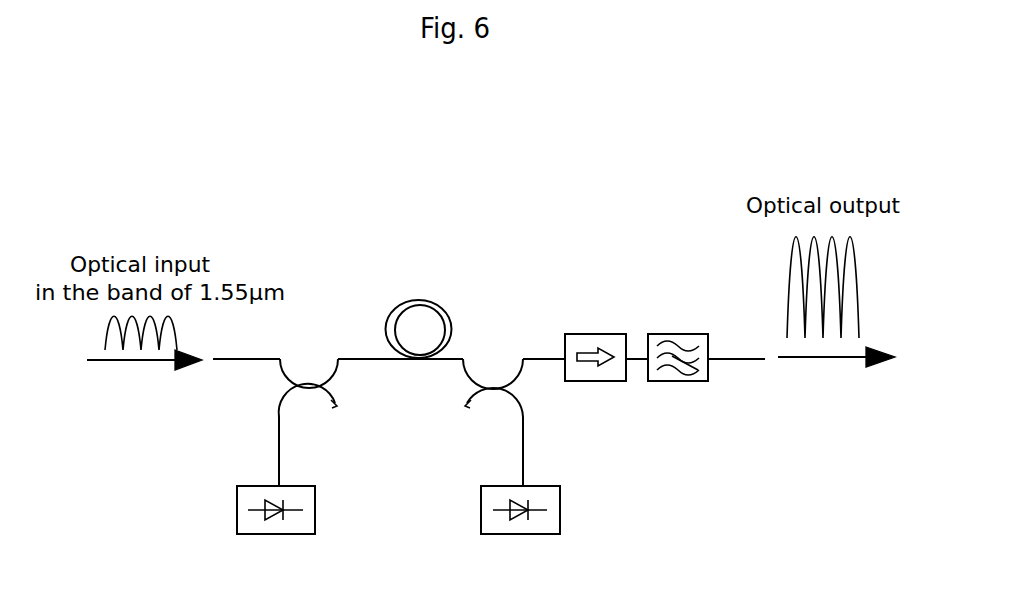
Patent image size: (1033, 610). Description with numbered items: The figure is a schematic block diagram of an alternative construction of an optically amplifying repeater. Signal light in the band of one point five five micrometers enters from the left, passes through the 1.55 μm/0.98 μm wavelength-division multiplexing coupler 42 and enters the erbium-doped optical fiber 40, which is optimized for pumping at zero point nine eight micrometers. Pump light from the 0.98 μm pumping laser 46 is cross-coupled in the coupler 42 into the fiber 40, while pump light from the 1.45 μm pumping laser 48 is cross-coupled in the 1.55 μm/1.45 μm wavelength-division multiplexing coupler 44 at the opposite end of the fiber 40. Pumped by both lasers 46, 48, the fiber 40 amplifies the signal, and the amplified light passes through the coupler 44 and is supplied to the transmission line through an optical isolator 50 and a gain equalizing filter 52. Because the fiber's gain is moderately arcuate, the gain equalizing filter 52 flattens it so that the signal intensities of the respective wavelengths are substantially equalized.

The erbium-doped optical fiber 40 is at (418, 320).
The 1.55 μm/0.98 μm wavelength-division multiplexing coupler 42 is at (313, 376).
The 1.55 μm/1.45 μm wavelength-division multiplexing coupler 44 is at (489, 377).
The 0.98 μm pumping laser 46 is at (243, 500).
The 1.45 μm pumping laser 48 is at (556, 498).
The optical isolator 50 is at (586, 338).
The gain equalizing filter 52 is at (688, 340).